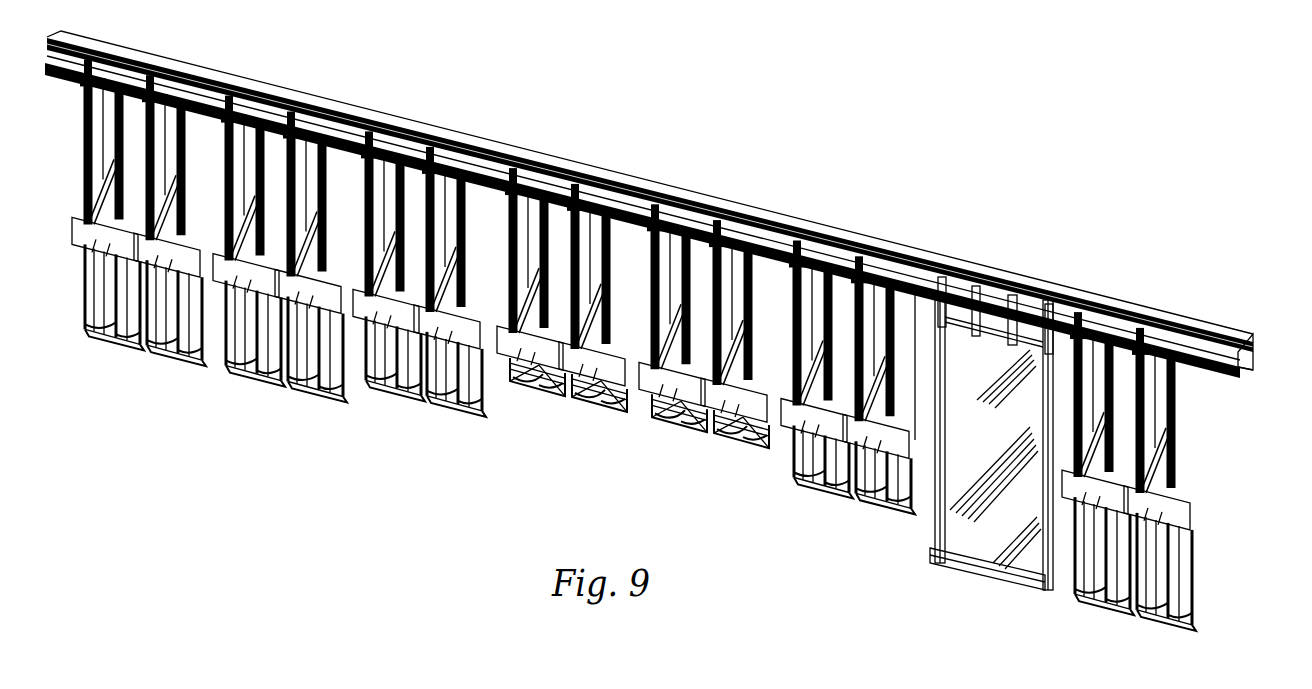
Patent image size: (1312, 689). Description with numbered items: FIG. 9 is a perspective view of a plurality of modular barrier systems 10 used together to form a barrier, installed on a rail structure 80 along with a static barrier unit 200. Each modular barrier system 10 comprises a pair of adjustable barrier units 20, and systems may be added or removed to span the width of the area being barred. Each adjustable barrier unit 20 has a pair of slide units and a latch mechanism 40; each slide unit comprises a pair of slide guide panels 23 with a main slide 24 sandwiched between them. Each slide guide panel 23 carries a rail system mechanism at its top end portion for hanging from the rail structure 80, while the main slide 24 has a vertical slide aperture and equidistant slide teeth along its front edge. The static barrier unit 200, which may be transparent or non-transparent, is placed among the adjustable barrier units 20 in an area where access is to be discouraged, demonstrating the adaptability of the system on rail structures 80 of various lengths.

The modular barrier system 10 is at (672, 335).
The adjustable barrier unit 20 is at (649, 203).
The slide guide panel 23 is at (483, 210).
The main slide 24 is at (488, 390).
The latch mechanism 40 is at (637, 396).
The rail structure 80 is at (1256, 357).
The static barrier unit 200 is at (988, 588).